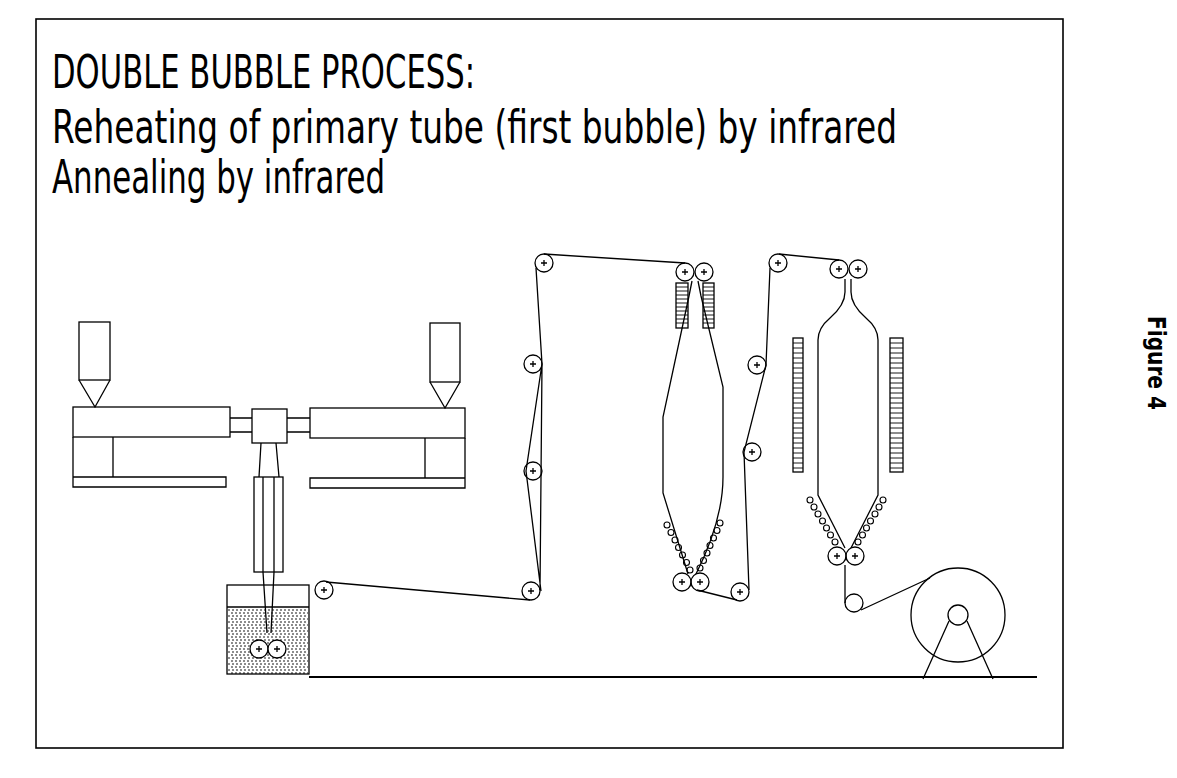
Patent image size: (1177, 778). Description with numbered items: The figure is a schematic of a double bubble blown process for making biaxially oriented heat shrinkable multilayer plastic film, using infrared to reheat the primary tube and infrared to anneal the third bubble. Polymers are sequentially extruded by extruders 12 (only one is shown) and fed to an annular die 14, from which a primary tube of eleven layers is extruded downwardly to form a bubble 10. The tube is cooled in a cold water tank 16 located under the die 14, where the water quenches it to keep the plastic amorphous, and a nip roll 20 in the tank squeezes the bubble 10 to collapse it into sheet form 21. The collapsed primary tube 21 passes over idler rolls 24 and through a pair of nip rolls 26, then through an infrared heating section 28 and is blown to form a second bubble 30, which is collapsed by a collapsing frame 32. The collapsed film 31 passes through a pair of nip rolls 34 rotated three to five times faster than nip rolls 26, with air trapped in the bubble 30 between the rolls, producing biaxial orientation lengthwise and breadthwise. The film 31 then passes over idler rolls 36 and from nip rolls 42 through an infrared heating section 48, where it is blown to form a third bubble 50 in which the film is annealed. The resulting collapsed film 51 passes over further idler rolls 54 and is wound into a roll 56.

The bubble 10 is at (268, 505).
The extruder 12 is at (105, 415).
The annular die 14 is at (270, 418).
The cold water tank 16 is at (242, 618).
The nip roll 20 is at (275, 657).
The collapsed primary tube 21 is at (428, 590).
The idler rolls 24 is at (330, 596).
The nip rolls 26 is at (692, 262).
The infrared heating section 28 is at (675, 302).
The second bubble 30 is at (690, 428).
The collapsed film 31 is at (717, 597).
The collapsing frame 32 is at (677, 547).
The nip rolls 34 is at (693, 593).
The idler rolls 36 is at (778, 257).
The nip rolls 42 is at (850, 258).
The infrared heating section 48 is at (903, 365).
The third bubble 50 is at (853, 340).
The collapsed film 51 is at (848, 583).
The idler rolls 54 is at (847, 610).
The roll 56 is at (955, 583).